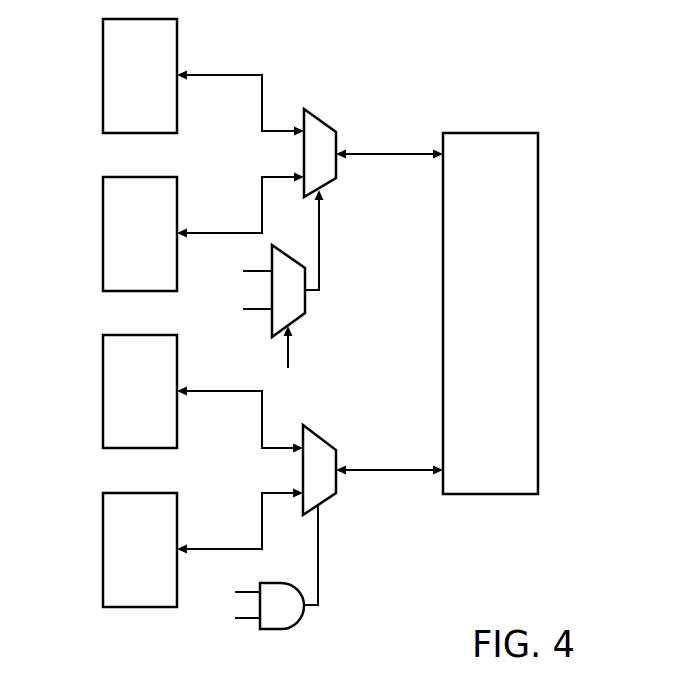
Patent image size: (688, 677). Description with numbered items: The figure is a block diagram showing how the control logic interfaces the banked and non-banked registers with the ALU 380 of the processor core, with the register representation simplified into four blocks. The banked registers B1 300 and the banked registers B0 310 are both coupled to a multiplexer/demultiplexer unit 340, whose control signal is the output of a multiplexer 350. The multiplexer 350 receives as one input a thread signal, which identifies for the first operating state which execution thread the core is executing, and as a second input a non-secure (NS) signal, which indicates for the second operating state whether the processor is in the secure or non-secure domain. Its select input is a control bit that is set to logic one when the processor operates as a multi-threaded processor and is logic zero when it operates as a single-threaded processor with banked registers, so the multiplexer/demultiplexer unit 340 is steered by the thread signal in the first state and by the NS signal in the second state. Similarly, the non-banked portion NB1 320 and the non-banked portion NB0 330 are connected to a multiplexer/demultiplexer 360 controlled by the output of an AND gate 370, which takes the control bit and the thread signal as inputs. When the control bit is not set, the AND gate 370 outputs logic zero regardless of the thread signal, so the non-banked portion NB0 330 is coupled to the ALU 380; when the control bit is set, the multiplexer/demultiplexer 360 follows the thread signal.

The banked registers B1 300 is at (103, 34).
The banked registers B0 310 is at (103, 191).
The non-banked portion NB1 320 is at (103, 350).
The non-banked portion NB0 330 is at (103, 509).
The multiplexer/demultiplexer unit 340 is at (338, 183).
The multiplexer 350 is at (309, 318).
The multiplexer/demultiplexer 360 is at (338, 500).
The AND gate 370 is at (304, 627).
The ALU 380 is at (540, 148).